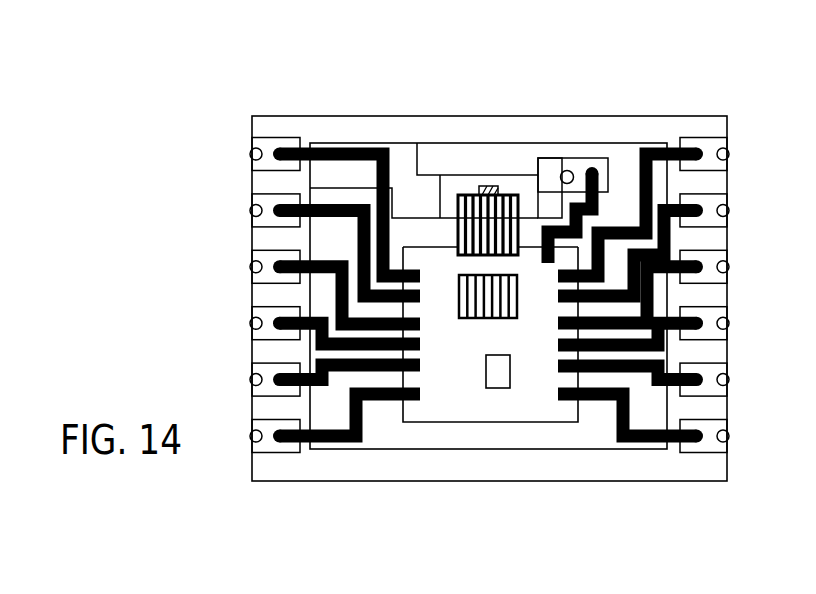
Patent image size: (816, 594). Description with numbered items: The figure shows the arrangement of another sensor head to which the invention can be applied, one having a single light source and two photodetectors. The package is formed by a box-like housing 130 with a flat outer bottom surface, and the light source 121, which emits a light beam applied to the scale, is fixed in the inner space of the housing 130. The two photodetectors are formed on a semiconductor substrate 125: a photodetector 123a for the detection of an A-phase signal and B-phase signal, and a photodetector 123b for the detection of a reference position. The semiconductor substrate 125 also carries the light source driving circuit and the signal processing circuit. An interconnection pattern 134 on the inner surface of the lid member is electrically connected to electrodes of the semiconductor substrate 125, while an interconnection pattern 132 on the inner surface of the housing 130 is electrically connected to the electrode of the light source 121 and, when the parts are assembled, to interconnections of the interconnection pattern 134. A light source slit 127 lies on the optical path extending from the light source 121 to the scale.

The housing 130 is at (250, 133).
The light source 121 is at (478, 186).
The photodetector 123a is at (459, 318).
The photodetector 123b is at (497, 378).
The semiconductor substrate 125 is at (562, 408).
The light source slit 127 is at (455, 195).
The interconnection pattern 132 is at (548, 158).
The interconnection pattern 134 is at (592, 167).